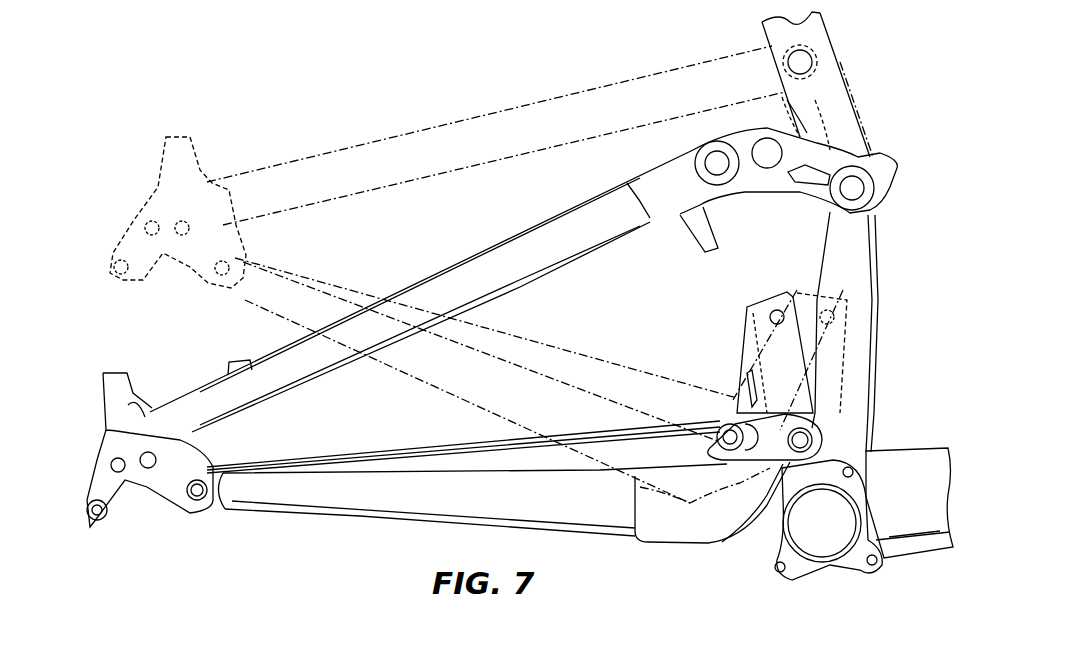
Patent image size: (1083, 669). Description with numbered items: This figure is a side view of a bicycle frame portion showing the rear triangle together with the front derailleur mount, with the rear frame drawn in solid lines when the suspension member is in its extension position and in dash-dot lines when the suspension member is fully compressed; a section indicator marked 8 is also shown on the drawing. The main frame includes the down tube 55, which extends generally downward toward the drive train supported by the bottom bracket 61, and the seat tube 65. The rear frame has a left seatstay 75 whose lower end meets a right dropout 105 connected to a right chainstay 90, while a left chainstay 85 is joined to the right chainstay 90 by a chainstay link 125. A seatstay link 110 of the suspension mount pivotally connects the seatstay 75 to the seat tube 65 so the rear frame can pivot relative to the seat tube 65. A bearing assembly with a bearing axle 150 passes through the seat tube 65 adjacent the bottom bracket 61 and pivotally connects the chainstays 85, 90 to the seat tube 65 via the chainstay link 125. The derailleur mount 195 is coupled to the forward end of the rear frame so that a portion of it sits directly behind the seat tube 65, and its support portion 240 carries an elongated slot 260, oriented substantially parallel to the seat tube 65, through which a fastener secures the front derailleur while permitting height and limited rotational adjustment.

The down tube 55 is at (918, 470).
The bottom bracket 61 is at (817, 568).
The seat tube 65 is at (866, 317).
The left seatstay 75 is at (357, 131).
The left chainstay 85 is at (340, 280).
The right chainstay 90 is at (268, 313).
The right dropout 105 is at (170, 285).
The seatstay link 110 is at (855, 85).
The chainstay link 125 is at (685, 556).
The bearing axle 150 is at (830, 420).
The derailleur mount 195 is at (742, 355).
The support portion 240 is at (748, 310).
The slot 260 is at (781, 309).
The section line 8- 8 is at (697, 288).